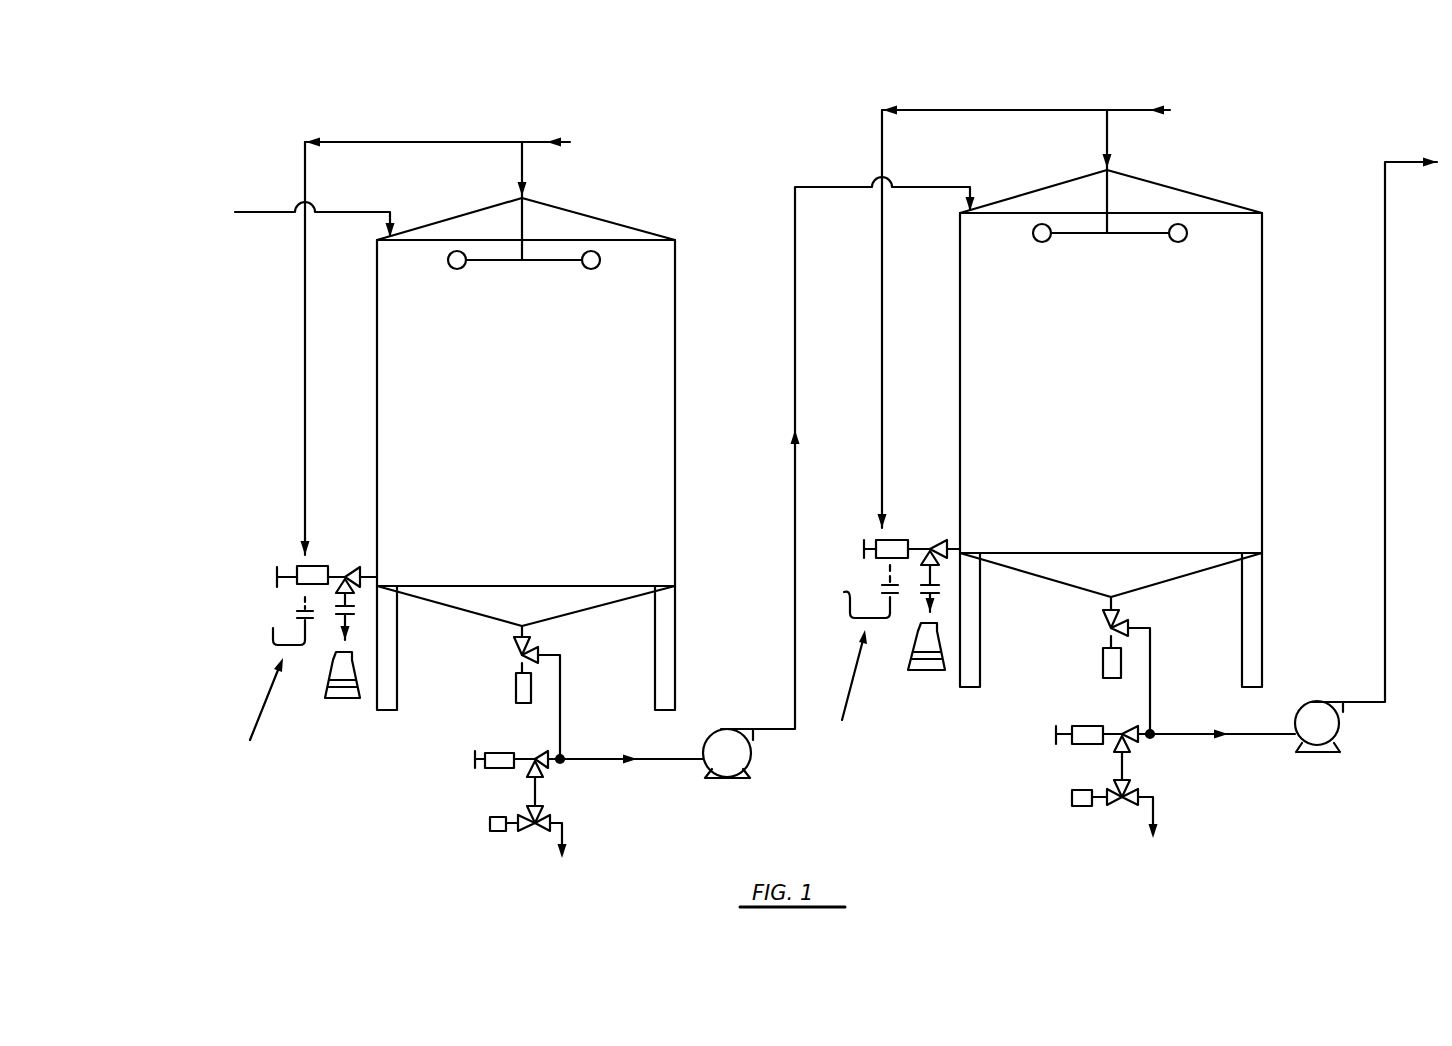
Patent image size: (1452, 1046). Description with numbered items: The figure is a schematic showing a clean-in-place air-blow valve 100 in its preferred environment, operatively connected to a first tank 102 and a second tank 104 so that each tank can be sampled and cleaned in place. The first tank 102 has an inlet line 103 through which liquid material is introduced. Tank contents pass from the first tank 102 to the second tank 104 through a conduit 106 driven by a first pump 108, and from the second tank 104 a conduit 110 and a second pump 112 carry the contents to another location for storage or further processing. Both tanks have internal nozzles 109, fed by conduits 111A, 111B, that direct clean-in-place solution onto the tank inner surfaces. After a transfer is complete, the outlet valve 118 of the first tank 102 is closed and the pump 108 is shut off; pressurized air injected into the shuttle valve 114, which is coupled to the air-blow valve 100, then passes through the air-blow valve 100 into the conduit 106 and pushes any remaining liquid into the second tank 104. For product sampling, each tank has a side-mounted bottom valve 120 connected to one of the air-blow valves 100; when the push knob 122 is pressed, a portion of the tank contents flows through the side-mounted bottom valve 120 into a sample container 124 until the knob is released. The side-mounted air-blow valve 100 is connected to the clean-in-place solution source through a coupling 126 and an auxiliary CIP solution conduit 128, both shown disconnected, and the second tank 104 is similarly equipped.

The air-blow valve 100 is at (502, 745).
The first tank 102 is at (548, 422).
The inlet line 103 is at (350, 212).
The second tank 104 is at (1138, 401).
The conduit 106 is at (585, 757).
The first pump 108 is at (733, 728).
The internal nozzles 109 is at (458, 270).
The conduit 110 is at (1385, 363).
The conduit 111A is at (534, 140).
The conduit 111B is at (1118, 108).
The second pump 112 is at (1322, 702).
The shuttle valve 114 is at (522, 843).
The outlet valve 118 is at (513, 655).
The side-mounted bottom valve 120 is at (352, 568).
The push knob 122 is at (277, 578).
The sample container 124 is at (330, 690).
The coupling 126 is at (273, 630).
The auxiliary CIP solution conduit 128 is at (455, 102).